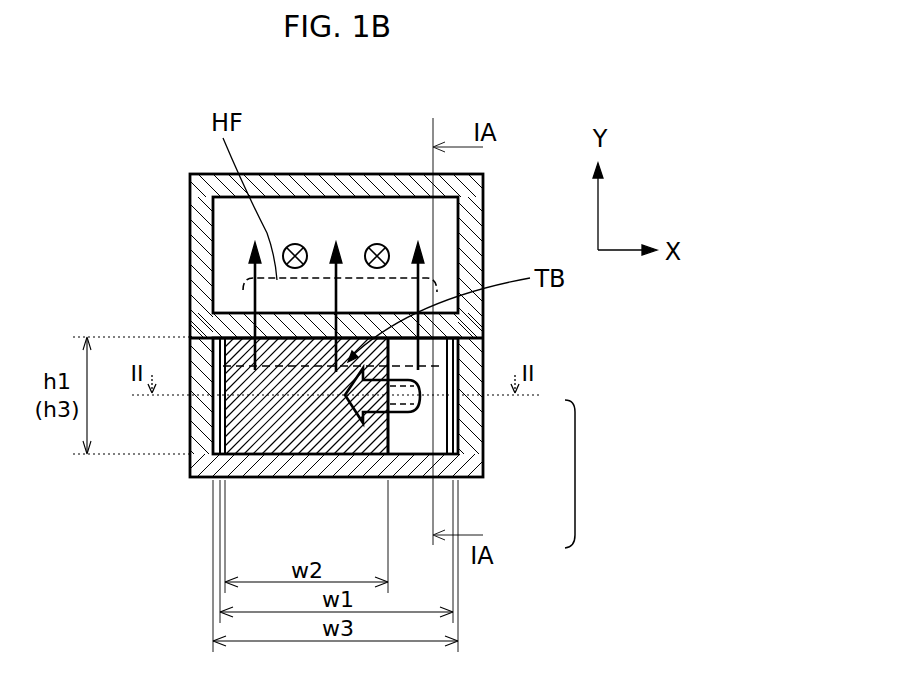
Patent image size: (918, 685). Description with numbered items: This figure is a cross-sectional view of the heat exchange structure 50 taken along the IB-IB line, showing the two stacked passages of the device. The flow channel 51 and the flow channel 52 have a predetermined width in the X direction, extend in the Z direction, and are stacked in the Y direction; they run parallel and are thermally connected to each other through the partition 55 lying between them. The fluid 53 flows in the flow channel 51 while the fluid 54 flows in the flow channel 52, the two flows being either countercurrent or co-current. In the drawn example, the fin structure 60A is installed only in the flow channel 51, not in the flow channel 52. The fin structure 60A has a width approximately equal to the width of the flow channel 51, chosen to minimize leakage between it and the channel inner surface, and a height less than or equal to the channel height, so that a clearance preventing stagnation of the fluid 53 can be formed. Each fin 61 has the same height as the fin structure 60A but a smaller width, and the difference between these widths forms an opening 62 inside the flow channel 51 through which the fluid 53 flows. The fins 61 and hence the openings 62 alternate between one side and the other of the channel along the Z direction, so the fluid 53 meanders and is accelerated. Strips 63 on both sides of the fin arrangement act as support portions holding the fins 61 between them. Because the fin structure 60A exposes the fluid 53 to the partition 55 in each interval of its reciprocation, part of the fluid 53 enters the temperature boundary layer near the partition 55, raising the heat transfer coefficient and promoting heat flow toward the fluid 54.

The heat exchange structure 50 is at (168, 132).
The flow channel 51 is at (193, 345).
The flow channel 52 is at (218, 232).
The fluid 53 is at (347, 407).
The fluid 54 is at (295, 243).
The partition 55 is at (278, 325).
The fin structure 60A is at (577, 437).
The fin 61 is at (390, 428).
The opening 62 is at (425, 355).
The strip 63 is at (223, 428).